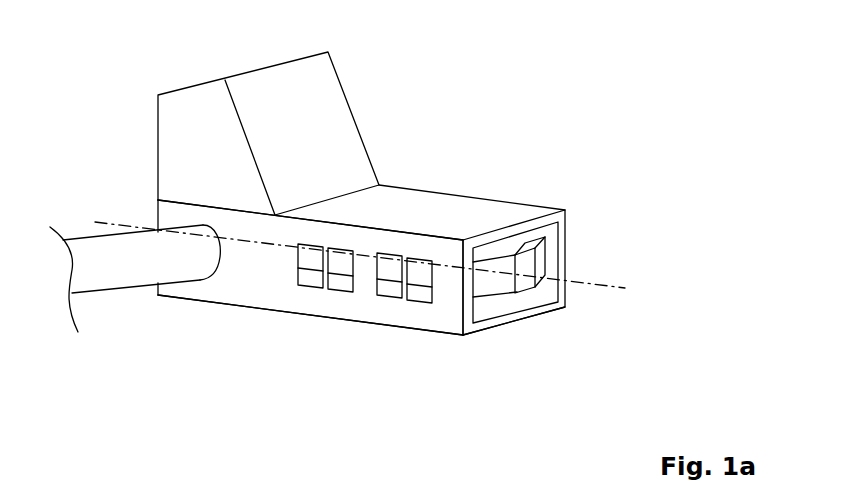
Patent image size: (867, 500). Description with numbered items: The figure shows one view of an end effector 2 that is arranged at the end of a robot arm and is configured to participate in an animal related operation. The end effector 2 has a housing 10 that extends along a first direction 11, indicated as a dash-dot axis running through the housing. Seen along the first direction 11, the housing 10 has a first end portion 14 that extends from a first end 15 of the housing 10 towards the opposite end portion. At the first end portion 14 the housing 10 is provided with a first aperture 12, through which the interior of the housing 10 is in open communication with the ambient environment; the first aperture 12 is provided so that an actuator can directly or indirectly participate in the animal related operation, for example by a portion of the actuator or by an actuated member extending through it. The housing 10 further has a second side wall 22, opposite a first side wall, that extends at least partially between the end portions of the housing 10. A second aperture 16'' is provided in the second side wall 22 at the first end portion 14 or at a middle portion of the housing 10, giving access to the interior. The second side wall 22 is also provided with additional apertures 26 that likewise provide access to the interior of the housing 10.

The end effector 2 is at (364, 240).
The housing 10 is at (362, 307).
The first direction 11 is at (613, 285).
The first aperture 12 is at (543, 288).
The first end portion 14 is at (420, 350).
The first end 15 is at (470, 328).
The second aperture 16'' is at (278, 317).
The second side wall 22 is at (412, 318).
The additional aperture 26 is at (412, 288).